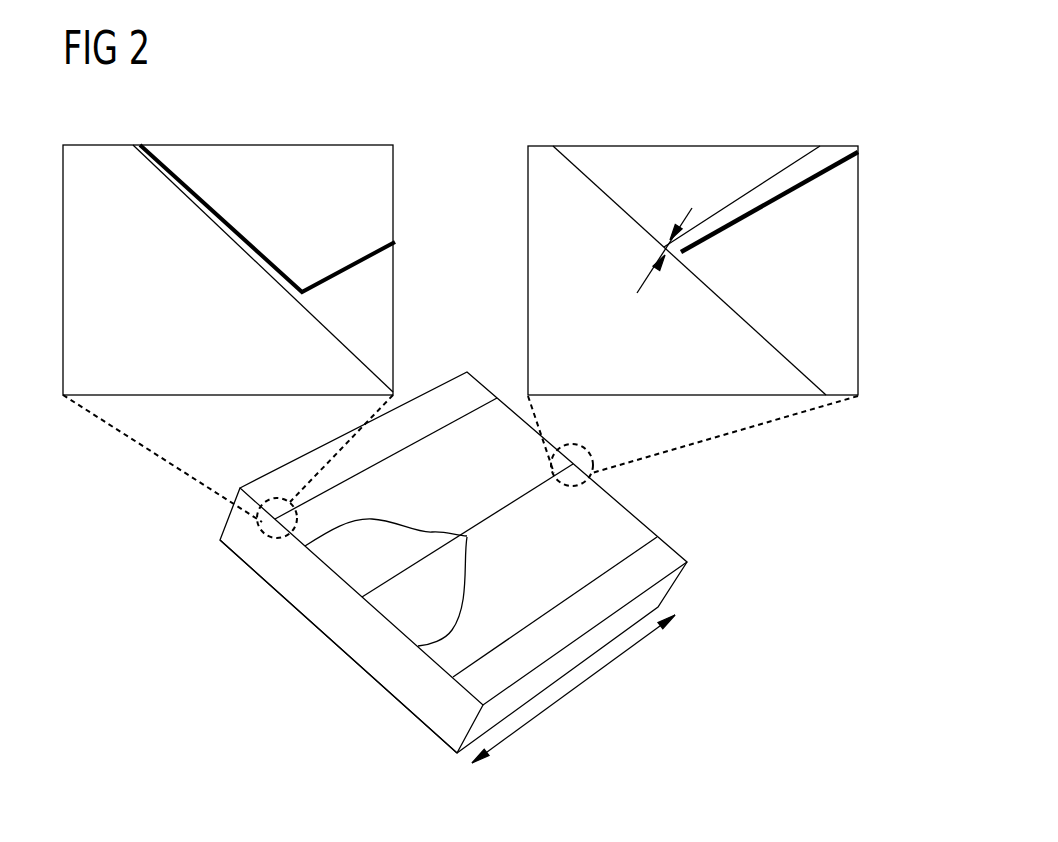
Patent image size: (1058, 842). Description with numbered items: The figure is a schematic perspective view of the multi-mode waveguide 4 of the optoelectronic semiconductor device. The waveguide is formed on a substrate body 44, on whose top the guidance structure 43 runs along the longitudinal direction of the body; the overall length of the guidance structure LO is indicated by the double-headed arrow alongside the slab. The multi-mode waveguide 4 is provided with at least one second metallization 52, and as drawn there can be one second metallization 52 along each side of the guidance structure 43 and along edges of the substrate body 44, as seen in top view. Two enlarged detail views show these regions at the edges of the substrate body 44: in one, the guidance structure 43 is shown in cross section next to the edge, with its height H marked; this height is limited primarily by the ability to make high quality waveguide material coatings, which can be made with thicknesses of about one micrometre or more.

The multi-mode waveguide 4 is at (862, 110).
The guidance structure 43 is at (720, 212).
The substrate body 44 is at (178, 383).
The second metallization 52 is at (284, 157).
The height of the guidance structure H is at (640, 292).
The overall length of the guidance structure LO is at (573, 689).